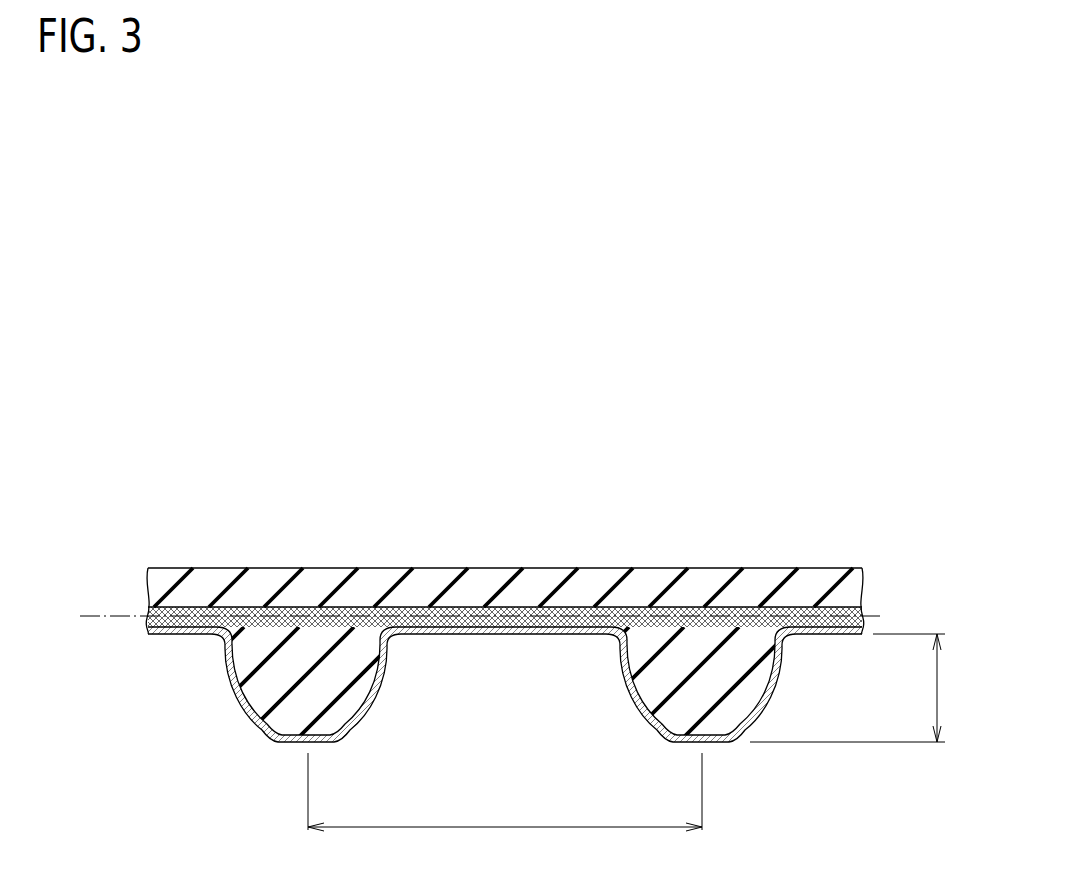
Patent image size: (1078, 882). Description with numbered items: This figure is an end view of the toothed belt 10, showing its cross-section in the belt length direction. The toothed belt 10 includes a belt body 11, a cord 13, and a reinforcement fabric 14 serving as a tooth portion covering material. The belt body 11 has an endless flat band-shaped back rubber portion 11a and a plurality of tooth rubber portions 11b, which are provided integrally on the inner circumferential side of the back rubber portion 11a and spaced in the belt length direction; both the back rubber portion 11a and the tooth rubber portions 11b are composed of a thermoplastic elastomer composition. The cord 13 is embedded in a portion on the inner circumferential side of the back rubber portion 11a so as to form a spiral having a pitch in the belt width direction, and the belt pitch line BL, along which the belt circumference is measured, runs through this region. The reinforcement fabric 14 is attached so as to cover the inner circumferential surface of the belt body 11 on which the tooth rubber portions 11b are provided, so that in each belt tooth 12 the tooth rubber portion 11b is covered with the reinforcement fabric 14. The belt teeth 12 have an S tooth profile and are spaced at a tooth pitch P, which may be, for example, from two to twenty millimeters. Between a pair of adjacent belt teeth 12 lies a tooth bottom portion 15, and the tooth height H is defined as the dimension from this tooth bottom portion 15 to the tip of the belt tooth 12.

The toothed belt 10 is at (785, 437).
The belt body 11 is at (505, 599).
The back rubber portion 11a is at (512, 572).
The tooth rubber portion 11b is at (277, 667).
The belt tooth 12 is at (250, 744).
The cord 13 is at (688, 615).
The reinforcement fabric 14 is at (640, 710).
The tooth bottom portion 15 is at (467, 697).
The belt pitch line BL is at (102, 615).
The tooth height H is at (854, 688).
The tooth pitch P is at (505, 807).